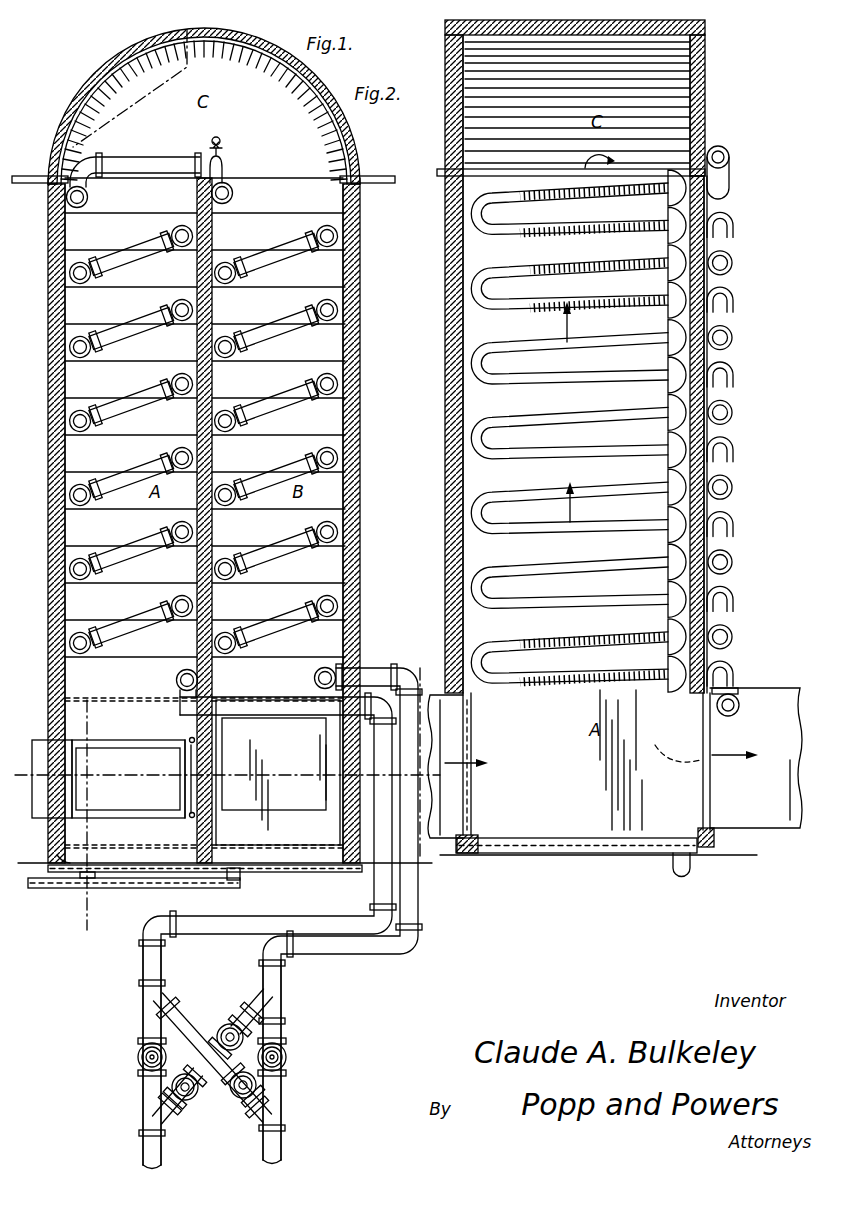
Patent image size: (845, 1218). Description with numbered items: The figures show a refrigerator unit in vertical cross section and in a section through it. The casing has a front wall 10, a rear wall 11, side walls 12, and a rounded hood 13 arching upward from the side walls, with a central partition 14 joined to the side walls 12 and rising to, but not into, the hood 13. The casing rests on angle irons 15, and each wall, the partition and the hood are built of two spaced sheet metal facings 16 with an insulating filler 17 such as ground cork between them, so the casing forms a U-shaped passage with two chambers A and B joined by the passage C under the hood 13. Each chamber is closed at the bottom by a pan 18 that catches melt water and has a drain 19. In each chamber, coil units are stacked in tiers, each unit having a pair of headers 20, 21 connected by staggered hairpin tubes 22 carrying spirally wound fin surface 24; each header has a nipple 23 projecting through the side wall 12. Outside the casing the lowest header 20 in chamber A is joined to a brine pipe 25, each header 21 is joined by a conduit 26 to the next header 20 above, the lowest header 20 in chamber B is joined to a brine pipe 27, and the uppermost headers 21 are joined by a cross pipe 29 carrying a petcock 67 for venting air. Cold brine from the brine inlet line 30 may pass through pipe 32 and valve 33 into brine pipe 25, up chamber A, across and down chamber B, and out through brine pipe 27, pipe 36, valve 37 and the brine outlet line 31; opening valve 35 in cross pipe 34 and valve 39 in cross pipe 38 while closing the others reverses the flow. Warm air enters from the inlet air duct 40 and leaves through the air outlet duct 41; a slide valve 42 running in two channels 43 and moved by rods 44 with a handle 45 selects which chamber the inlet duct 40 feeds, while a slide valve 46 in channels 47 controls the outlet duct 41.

In FIG. 1, the front wall 10 is at (60, 537).
In FIG. 1, the rear wall 11 is at (362, 543).
In FIG. 1, the side walls 12 is at (204, 106).
In FIG. 2, the side walls 12 is at (450, 410).
In FIG. 1, the rounded top or hood 13 is at (262, 56).
In FIG. 2, the rounded top or hood 13 is at (577, 102).
In FIG. 1, the central partition 14 is at (197, 268).
In FIG. 1, the angle irons 15 is at (62, 853).
In FIG. 2, the angle irons 15 is at (720, 285).
In FIG. 1, the sheet metal facings 16 is at (62, 392).
In FIG. 2, the sheet metal facings 16 is at (466, 396).
In FIG. 1, the insulating filler 17 is at (347, 408).
In FIG. 2, the insulating filler 17 is at (706, 93).
In FIG. 1, the pan 18 is at (185, 875).
In FIG. 2, the pan 18 is at (565, 856).
In FIG. 1, the drain 19 is at (82, 888).
In FIG. 2, the drain 19 is at (690, 876).
In FIG. 1, the header 20 is at (204, 458).
In FIG. 2, the header 20 is at (684, 688).
In FIG. 1, the header 21 is at (204, 420).
In FIG. 2, the header 21 is at (670, 646).
In FIG. 2, the hairpin tubes 22 is at (572, 440).
In FIG. 1, the nipple 23 is at (222, 205).
In FIG. 2, the nipple 23 is at (690, 169).
In FIG. 2, the extended or fin surface 24 is at (605, 231).
In FIG. 1, the brine pipe 25 is at (340, 917).
In FIG. 1, the pipe or conduit 26 is at (142, 323).
In FIG. 2, the pipe or conduit 26 is at (735, 238).
In FIG. 1, the brine pipe 27 is at (418, 915).
In FIG. 2, the brine pipe 27 is at (740, 705).
In FIG. 1, the cross pipe 29 is at (165, 158).
In FIG. 2, the cross pipe 29 is at (729, 160).
In FIG. 1, the brine inlet line 30 is at (161, 1165).
In FIG. 1, the brine outlet line 31 is at (281, 1160).
In FIG. 1, the pipe 32 is at (143, 1028).
In FIG. 1, the valve 33 is at (138, 1057).
In FIG. 1, the cross pipe 34 is at (245, 1020).
In FIG. 1, the valve 35 is at (192, 1098).
In FIG. 1, the pipe 36 is at (281, 1022).
In FIG. 1, the valve 37 is at (286, 1057).
In FIG. 1, the cross pipe 38 is at (198, 1036).
In FIG. 1, the valve 39 is at (243, 1105).
In FIG. 1, the inlet air duct 40 is at (128, 779).
In FIG. 2, the inlet air duct 40 is at (445, 766).
In FIG. 2, the air outlet duct 41 is at (756, 758).
In FIG. 1, the slide valve 42 is at (278, 772).
In FIG. 2, the slide valve 42 is at (472, 745).
In FIG. 1, the channels 43 is at (147, 706).
In FIG. 2, the channels 43 is at (478, 700).
In FIG. 1, the bars or rods 44 is at (115, 742).
In FIG. 2, the bars or rods 44 is at (478, 809).
In FIG. 1, the handle 45 is at (52, 779).
In FIG. 2, the slide valve 46 is at (700, 772).
In FIG. 2, the channels 47 is at (718, 720).
In FIG. 1, the air valve or petcock 67 is at (214, 146).